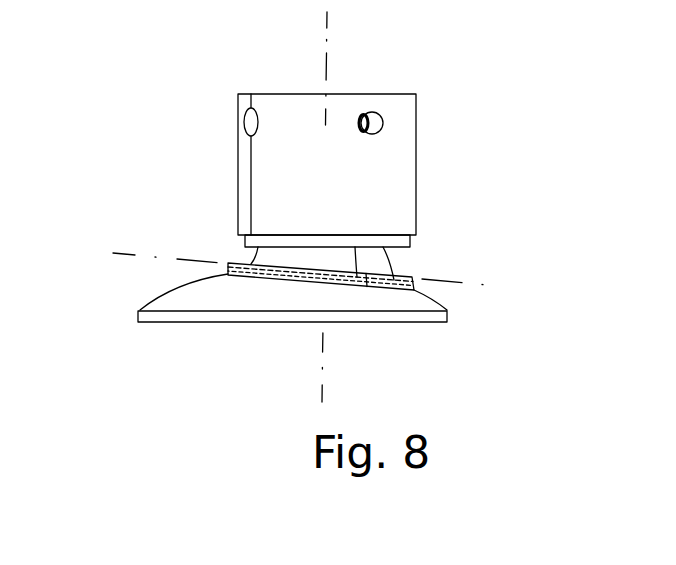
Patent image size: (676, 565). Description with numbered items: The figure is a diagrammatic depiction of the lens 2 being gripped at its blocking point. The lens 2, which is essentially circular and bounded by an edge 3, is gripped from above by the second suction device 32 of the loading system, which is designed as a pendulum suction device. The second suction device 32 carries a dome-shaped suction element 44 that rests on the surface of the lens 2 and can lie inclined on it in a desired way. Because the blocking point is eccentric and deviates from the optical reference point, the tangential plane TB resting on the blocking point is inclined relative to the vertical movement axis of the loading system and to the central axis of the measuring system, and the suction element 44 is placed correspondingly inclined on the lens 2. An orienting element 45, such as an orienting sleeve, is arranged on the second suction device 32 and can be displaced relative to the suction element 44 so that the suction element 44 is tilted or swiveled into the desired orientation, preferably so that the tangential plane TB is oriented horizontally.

The second suction device 32 is at (238, 135).
The orienting element 45 is at (245, 240).
The suction element 44 is at (227, 264).
The lens 2 is at (198, 298).
The edge 3 is at (172, 317).
The tangential plane TB is at (522, 288).